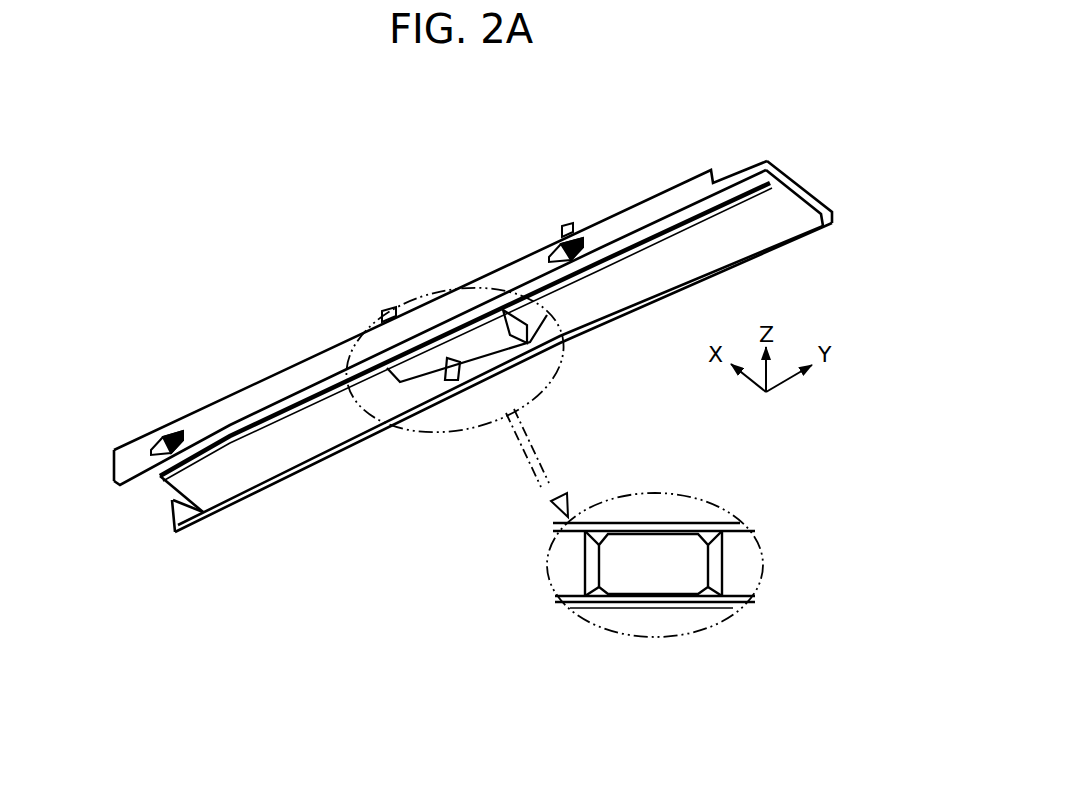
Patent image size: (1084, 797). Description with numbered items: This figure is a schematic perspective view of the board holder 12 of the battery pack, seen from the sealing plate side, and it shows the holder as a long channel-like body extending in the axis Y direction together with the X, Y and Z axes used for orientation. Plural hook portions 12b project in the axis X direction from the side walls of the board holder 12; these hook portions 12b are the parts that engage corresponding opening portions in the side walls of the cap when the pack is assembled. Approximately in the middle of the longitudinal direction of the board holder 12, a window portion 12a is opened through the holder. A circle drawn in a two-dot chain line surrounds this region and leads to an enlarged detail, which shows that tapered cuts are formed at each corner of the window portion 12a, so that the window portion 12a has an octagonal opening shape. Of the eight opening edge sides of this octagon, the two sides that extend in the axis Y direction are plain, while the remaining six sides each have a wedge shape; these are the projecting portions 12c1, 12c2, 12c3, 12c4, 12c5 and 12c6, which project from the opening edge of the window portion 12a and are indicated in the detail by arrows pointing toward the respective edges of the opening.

The board holder 12 is at (693, 196).
The window portion 12a is at (410, 392).
The hook portion 12b is at (162, 433).
The projecting portion 12c1 is at (663, 555).
The projecting portion 12c2 is at (603, 569).
The projecting portion 12c3 is at (604, 572).
The projecting portion 12c4 is at (699, 537).
The projecting portion 12c5 is at (703, 562).
The projecting portion 12c6 is at (573, 520).